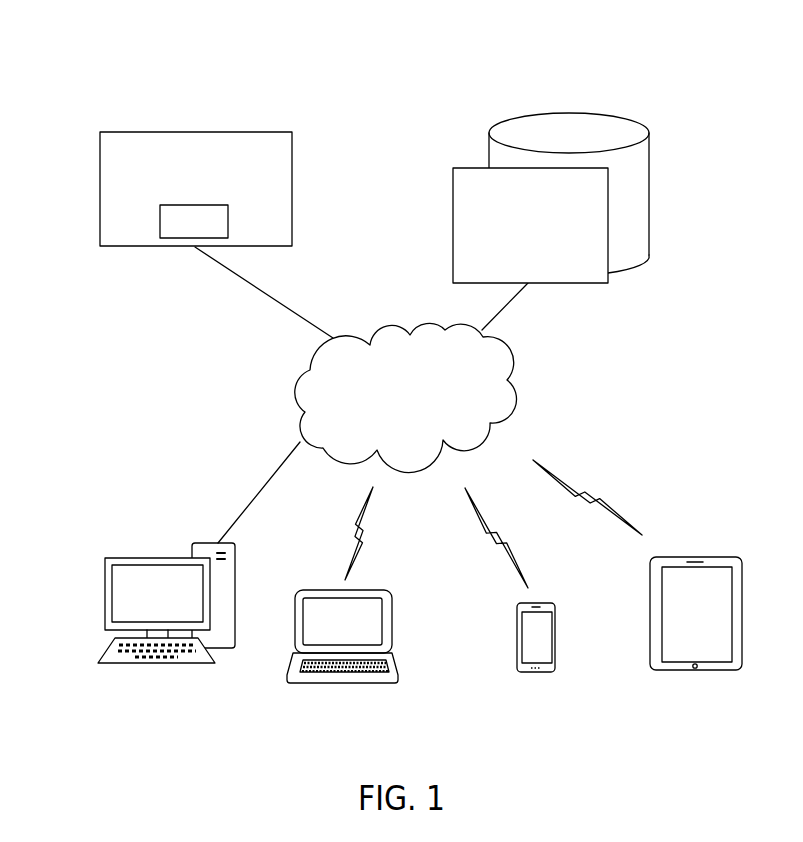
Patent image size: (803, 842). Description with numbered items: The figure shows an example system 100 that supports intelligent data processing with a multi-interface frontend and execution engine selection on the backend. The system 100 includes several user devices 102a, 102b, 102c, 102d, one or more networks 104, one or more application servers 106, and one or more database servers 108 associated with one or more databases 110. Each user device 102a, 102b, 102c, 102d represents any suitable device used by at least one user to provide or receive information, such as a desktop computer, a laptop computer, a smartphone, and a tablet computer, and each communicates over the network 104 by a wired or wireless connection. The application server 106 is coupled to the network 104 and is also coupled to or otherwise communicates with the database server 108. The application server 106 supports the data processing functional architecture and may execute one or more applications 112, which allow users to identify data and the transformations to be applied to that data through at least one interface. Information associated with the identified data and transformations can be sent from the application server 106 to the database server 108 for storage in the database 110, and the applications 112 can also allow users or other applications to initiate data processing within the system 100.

The system 100 is at (661, 86).
The user device 102a is at (150, 663).
The user device 102b is at (345, 685).
The user device 102c is at (532, 673).
The user device 102d is at (687, 673).
The network 104 is at (296, 393).
The application server 106 is at (160, 189).
The database server 108 is at (453, 222).
The database 110 is at (649, 190).
The application 112 is at (194, 221).